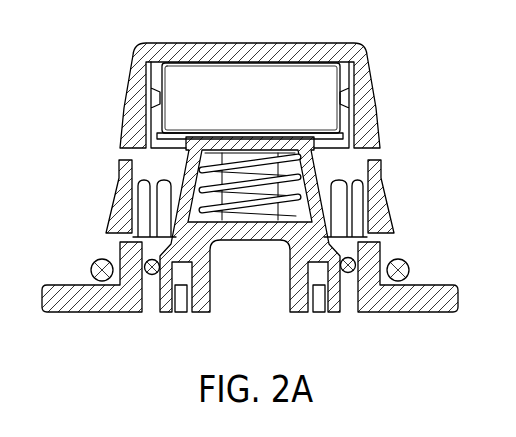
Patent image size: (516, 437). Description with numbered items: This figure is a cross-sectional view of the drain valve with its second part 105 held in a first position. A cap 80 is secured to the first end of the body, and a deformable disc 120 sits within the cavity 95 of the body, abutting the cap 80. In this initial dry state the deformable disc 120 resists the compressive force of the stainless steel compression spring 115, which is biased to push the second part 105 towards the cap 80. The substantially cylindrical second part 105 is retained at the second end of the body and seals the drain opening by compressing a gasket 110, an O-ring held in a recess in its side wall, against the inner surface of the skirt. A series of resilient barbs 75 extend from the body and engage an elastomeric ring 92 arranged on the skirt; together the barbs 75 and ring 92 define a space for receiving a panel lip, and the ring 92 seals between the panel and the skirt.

The cap 80 is at (330, 50).
The deformable disc 120 is at (262, 110).
The compression spring 115 is at (202, 167).
The resilient barbs 75 is at (112, 207).
The cavity 95 is at (343, 208).
The elastomeric ring 92 is at (93, 266).
The second part 105 is at (154, 276).
The gasket 110 is at (349, 274).